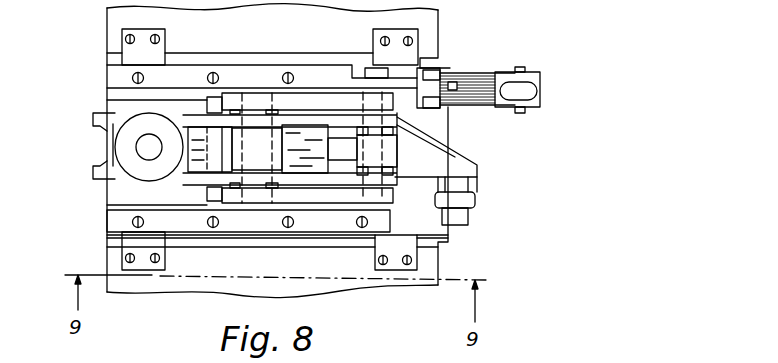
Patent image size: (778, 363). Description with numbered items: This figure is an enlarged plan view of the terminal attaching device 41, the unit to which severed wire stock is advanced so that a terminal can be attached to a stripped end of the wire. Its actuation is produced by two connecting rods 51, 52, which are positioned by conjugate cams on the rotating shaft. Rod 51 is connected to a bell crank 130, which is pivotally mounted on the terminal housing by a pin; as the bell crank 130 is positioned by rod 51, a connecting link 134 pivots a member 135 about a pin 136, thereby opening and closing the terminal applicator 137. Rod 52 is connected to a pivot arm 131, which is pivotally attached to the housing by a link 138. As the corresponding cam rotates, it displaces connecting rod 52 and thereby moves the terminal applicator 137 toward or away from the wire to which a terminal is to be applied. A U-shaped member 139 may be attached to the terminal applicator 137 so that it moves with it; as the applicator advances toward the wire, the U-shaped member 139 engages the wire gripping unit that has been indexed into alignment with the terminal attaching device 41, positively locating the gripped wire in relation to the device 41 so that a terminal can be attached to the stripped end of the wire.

The terminal attaching device 41 is at (428, 38).
The connecting rod 51 is at (469, 203).
The connecting rod 52 is at (536, 88).
The bell crank 130 is at (452, 153).
The pivot arm 131 is at (470, 90).
The connecting link 134 is at (352, 150).
The member 135 is at (190, 97).
The pin 136 is at (268, 192).
The terminal applicator 137 is at (126, 137).
The link 138 is at (402, 86).
The U-shaped member 139 is at (93, 114).